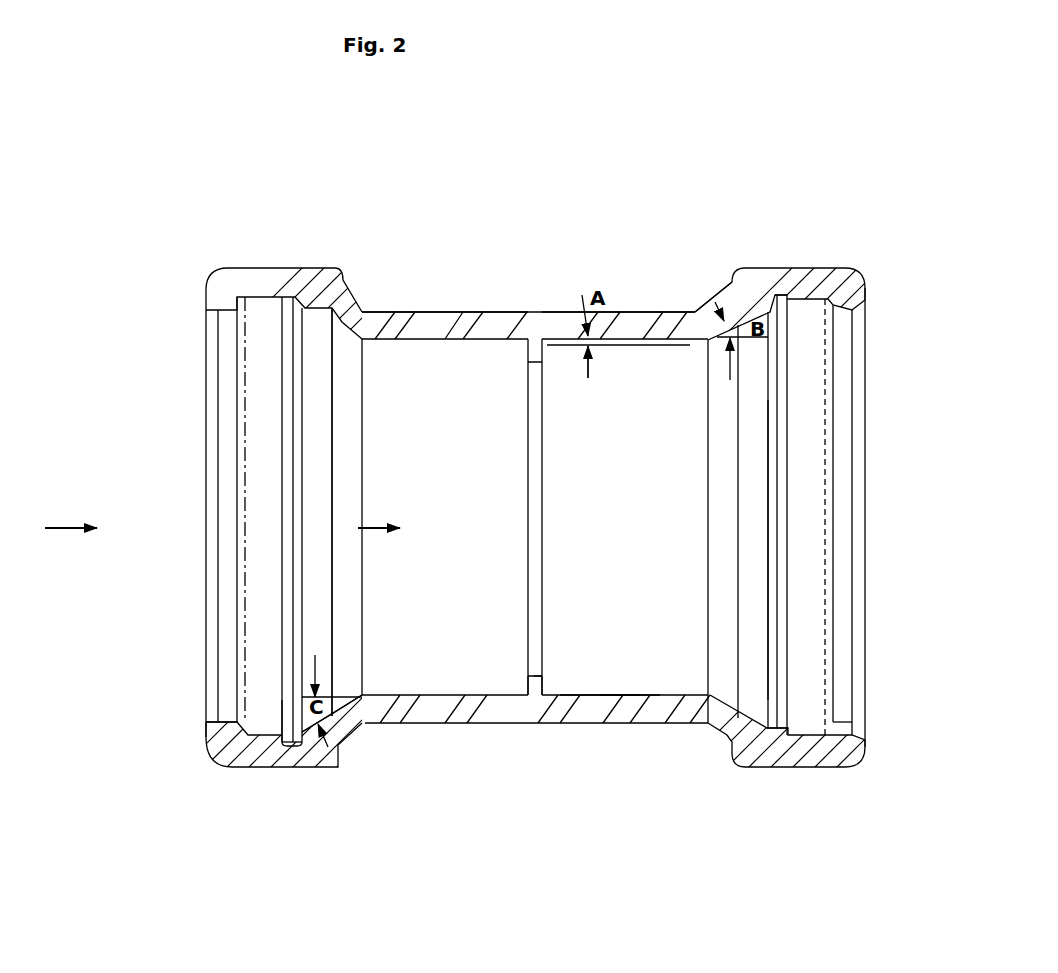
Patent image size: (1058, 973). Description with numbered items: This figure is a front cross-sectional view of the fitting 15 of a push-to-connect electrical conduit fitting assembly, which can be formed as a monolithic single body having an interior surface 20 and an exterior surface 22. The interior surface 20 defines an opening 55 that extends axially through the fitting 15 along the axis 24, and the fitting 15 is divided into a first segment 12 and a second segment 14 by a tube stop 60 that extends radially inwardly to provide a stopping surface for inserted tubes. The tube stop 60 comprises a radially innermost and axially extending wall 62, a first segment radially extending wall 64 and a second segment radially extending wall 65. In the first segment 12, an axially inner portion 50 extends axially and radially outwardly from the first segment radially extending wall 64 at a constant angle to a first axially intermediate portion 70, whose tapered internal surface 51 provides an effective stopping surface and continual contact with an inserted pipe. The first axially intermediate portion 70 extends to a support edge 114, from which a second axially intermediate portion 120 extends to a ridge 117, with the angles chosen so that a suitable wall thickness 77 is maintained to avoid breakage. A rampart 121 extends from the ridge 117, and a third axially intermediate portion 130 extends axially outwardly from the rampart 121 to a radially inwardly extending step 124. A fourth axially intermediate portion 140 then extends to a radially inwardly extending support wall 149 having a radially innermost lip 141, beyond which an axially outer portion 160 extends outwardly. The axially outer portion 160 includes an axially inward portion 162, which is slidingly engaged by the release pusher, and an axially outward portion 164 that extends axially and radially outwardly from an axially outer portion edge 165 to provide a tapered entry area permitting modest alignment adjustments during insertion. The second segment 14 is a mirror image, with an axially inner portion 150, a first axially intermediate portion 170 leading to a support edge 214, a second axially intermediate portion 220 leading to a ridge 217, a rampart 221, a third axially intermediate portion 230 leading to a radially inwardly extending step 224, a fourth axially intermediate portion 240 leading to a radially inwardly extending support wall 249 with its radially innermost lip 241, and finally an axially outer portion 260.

The first segment 12 is at (665, 277).
The second segment 14 is at (460, 215).
The fitting 15 is at (782, 120).
The interior surface 20 is at (405, 695).
The exterior surface 22 is at (432, 312).
The axis 24 is at (388, 524).
The axially inner portion 50 is at (632, 652).
The tapered internal surface 51 is at (590, 692).
The opening 55 is at (80, 524).
The tube stop 60 is at (535, 355).
The radially innermost and axially extending wall 62 is at (540, 676).
The first segment radially extending wall 64 is at (542, 688).
The second segment radially extending wall 65 is at (528, 683).
The first axially intermediate portion 70 is at (722, 692).
The wall thickness 77 is at (727, 300).
The support edge 114 is at (753, 705).
The ridge 117 is at (768, 615).
The second axially intermediate portion 120 is at (778, 737).
The rampart 121 is at (767, 730).
The radially inwardly extending step 124 is at (777, 293).
The third axially intermediate portion 130 is at (778, 740).
The fourth axially intermediate portion 140 is at (820, 717).
The radially innermost lip 141 is at (837, 720).
The radially inwardly extending support wall 149 is at (836, 311).
The axially inner portion 150 is at (476, 362).
The axially outer portion 160 is at (855, 410).
The axially inward portion 162 is at (845, 370).
The axially outward portion 164 is at (866, 460).
The axially outer portion edge 165 is at (853, 717).
The first axially intermediate portion 170 is at (345, 350).
The support edge 214 is at (328, 730).
The ridge 217 is at (302, 728).
The second axially intermediate portion 220 is at (315, 325).
The rampart 221 is at (288, 683).
The radially inwardly extending step 224 is at (288, 740).
The third axially intermediate portion 230 is at (290, 288).
The fourth axially intermediate portion 240 is at (262, 330).
The radially innermost lip 241 is at (240, 316).
The radially inwardly extending support wall 249 is at (240, 722).
The axially outer portion 260 is at (212, 352).